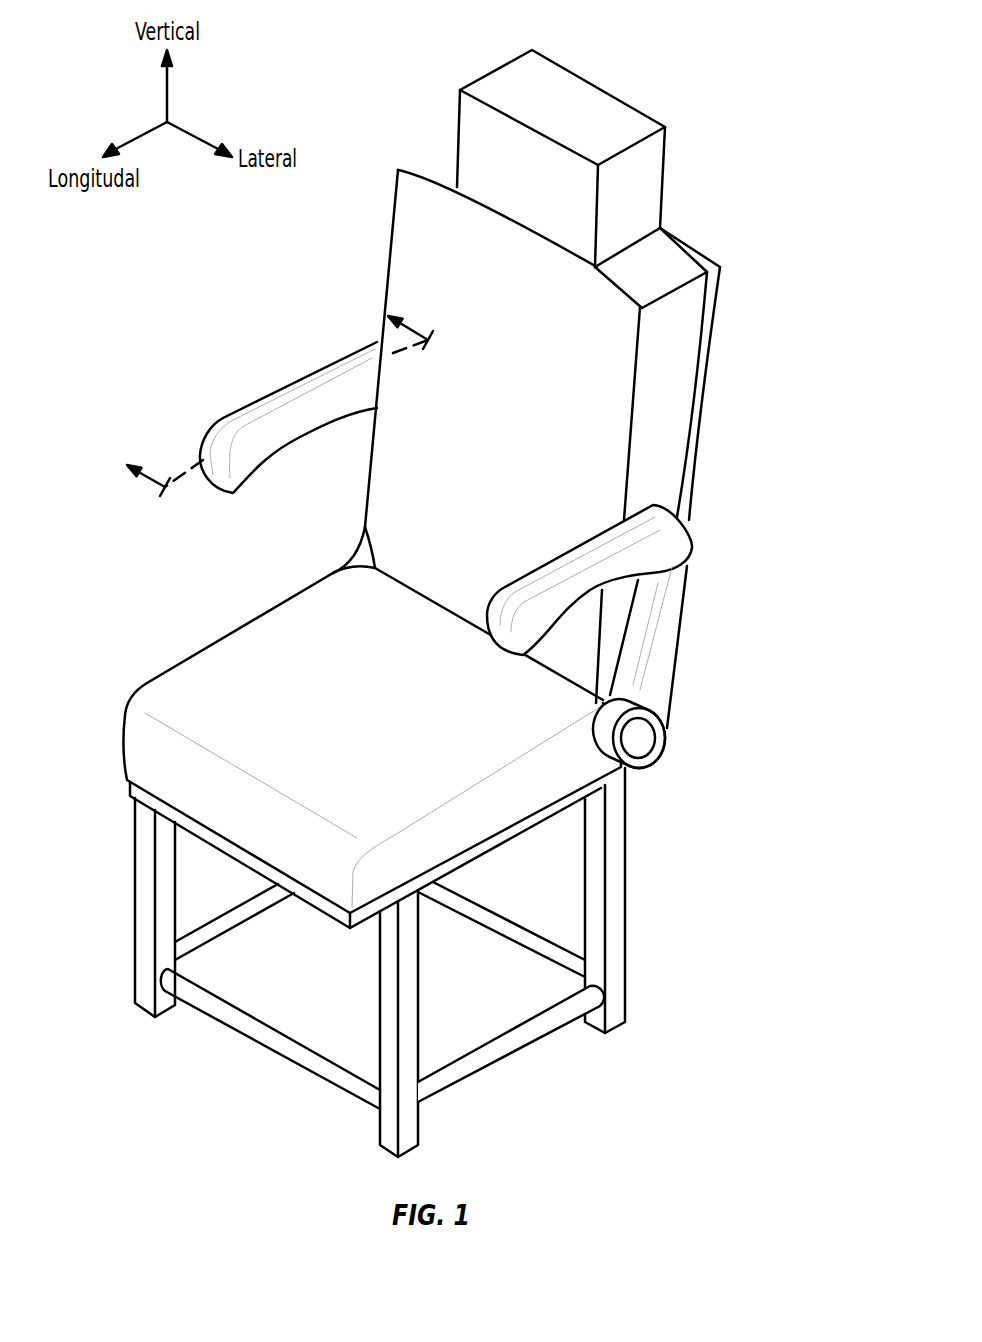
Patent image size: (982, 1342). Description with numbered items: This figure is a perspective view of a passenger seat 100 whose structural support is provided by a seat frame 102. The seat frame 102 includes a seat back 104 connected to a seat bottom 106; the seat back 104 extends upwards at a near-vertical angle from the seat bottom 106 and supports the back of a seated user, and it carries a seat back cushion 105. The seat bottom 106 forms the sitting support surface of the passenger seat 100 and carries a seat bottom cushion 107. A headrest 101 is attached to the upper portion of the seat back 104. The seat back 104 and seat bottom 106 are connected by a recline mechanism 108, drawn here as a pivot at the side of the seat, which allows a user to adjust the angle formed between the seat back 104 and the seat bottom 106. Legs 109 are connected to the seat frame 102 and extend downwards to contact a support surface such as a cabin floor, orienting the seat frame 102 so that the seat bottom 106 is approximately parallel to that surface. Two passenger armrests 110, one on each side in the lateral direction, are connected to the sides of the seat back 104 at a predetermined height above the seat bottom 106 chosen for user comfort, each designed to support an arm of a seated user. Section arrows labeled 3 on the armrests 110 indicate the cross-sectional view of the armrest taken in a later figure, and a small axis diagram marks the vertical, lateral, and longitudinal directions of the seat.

The passenger seat 100 is at (724, 146).
The headrest 101 is at (597, 110).
The seat frame 102 is at (707, 323).
The seat back 104 is at (667, 393).
The seat back cushion 105 is at (409, 239).
The seat bottom 106 is at (528, 818).
The seat bottom cushion 107 is at (210, 675).
The recline mechanism 108 is at (640, 740).
The legs 109 is at (147, 1003).
The passenger armrest 110 is at (285, 384).
The section line for FIG. 3 is at (292, 416).